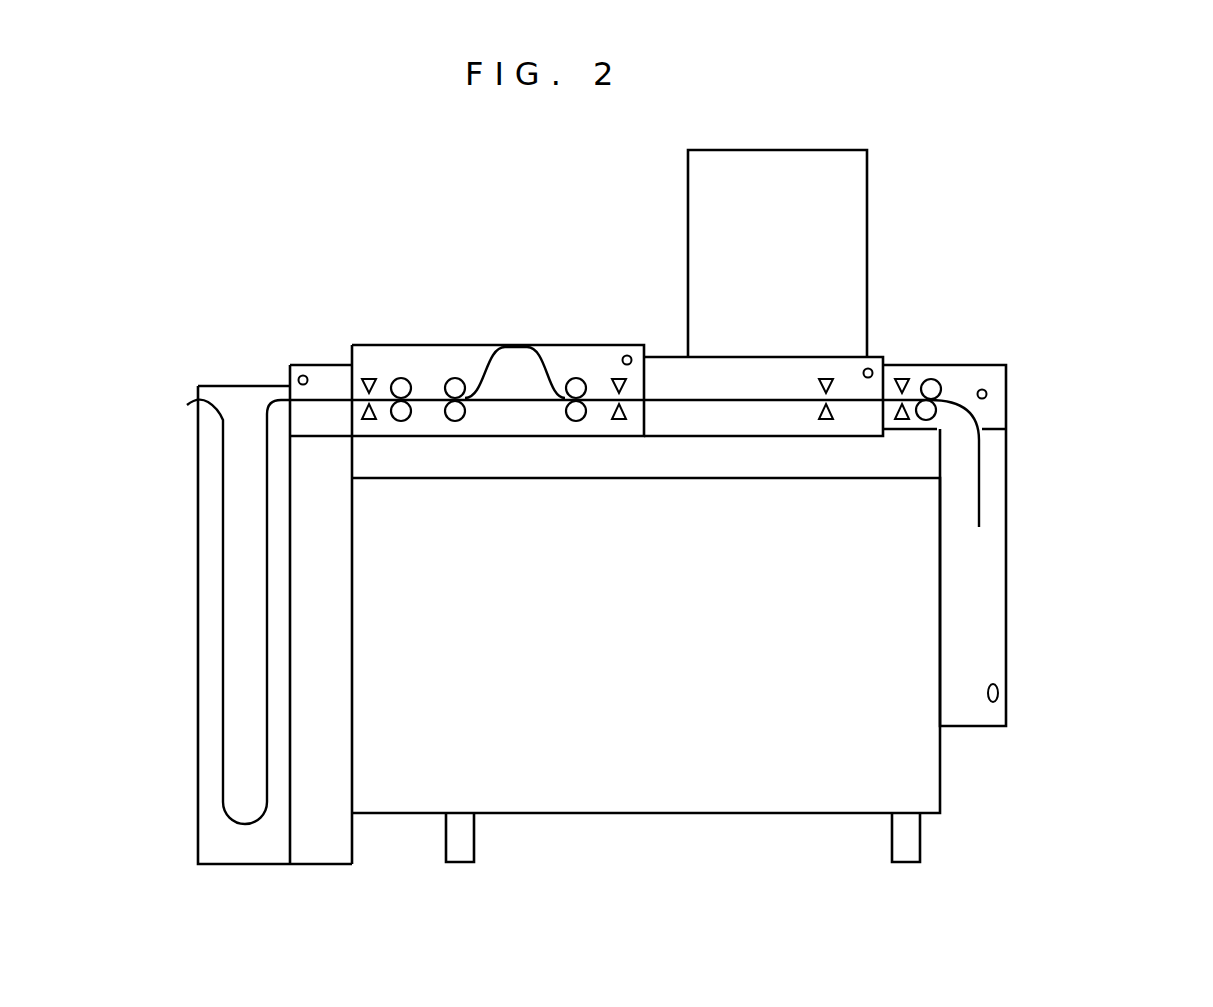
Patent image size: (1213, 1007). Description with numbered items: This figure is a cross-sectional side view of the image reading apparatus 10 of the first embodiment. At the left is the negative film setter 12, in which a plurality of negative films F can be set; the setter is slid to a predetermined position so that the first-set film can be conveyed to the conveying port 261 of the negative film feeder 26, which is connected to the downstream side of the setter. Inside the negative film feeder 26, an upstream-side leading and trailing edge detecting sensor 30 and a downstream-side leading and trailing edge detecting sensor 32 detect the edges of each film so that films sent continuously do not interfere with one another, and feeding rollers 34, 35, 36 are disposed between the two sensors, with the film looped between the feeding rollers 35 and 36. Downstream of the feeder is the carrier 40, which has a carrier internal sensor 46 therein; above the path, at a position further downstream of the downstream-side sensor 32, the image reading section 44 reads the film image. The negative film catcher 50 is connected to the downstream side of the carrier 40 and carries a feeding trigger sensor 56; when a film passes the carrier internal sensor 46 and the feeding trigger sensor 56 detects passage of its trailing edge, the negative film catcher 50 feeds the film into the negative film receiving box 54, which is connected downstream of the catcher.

The image reading apparatus 10 is at (1141, 134).
The negative film setter 12 is at (210, 342).
The negative film F is at (223, 530).
The conveying port 261 is at (347, 393).
The negative film feeder 26 is at (578, 345).
The upstream-side leading and trailing edge detecting sensor 30 is at (375, 372).
The downstream-side leading and trailing edge detecting sensor 32 is at (619, 371).
The feeding roller 34 is at (397, 426).
The feeding roller 35 is at (452, 426).
The feeding roller 36 is at (572, 426).
The carrier 40 is at (766, 437).
The image reading section 44 is at (867, 197).
The carrier internal sensor 46 is at (826, 371).
The negative film catcher 50 is at (1006, 398).
The negative film receiving box 54 is at (1006, 590).
The feeding trigger sensor 56 is at (903, 367).